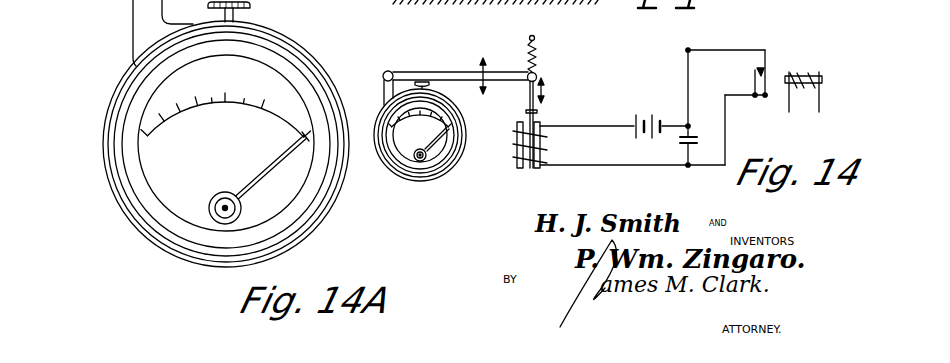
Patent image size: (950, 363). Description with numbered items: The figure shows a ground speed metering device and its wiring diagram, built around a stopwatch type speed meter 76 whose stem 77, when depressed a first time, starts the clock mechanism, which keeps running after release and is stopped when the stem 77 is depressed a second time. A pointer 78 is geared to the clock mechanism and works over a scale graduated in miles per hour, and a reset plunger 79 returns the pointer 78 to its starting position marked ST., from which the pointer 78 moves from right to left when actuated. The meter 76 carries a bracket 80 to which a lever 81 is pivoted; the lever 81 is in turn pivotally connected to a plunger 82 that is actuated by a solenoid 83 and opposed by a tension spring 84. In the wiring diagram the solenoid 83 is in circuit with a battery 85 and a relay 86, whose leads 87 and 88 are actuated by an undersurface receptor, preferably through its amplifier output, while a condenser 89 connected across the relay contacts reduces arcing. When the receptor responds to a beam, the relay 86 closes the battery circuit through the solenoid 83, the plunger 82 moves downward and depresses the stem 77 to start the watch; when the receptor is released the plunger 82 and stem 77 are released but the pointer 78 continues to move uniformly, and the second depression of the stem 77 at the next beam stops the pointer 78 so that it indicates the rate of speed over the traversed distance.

In FIG. 14A, the stopwatch type speed meter 76 is at (152, 221).
In FIG. 14, the stopwatch type speed meter 76 is at (447, 167).
In FIG. 14A, the stem 77 is at (250, 5).
In FIG. 14, the stem 77 is at (433, 81).
In FIG. 14A, the pointer 78 is at (272, 165).
In FIG. 14A, the reset plunger 79 is at (210, 204).
In FIG. 14A, the bracket 80 is at (147, 22).
In FIG. 14, the bracket 80 is at (386, 80).
In FIG. 14, the lever 81 is at (497, 74).
In FIG. 14, the plunger 82 is at (527, 98).
In FIG. 14, the solenoid 83 is at (550, 155).
In FIG. 14, the tension spring 84 is at (537, 60).
In FIG. 14, the battery 85 is at (649, 114).
In FIG. 14, the relay 86 is at (818, 47).
In FIG. 14, the lead 87 is at (790, 102).
In FIG. 14, the lead 88 is at (819, 102).
In FIG. 14, the condenser 89 is at (699, 150).